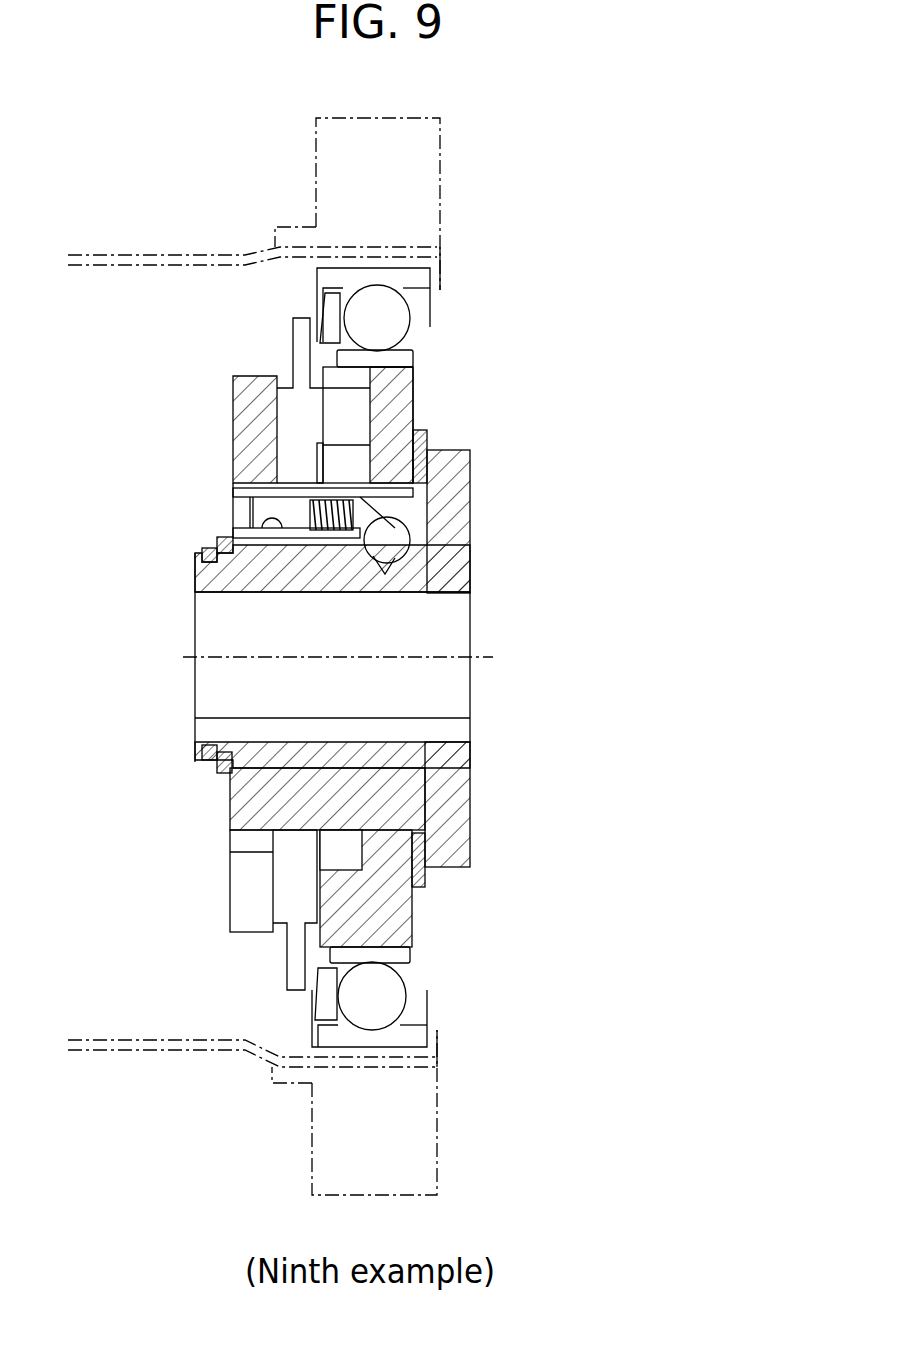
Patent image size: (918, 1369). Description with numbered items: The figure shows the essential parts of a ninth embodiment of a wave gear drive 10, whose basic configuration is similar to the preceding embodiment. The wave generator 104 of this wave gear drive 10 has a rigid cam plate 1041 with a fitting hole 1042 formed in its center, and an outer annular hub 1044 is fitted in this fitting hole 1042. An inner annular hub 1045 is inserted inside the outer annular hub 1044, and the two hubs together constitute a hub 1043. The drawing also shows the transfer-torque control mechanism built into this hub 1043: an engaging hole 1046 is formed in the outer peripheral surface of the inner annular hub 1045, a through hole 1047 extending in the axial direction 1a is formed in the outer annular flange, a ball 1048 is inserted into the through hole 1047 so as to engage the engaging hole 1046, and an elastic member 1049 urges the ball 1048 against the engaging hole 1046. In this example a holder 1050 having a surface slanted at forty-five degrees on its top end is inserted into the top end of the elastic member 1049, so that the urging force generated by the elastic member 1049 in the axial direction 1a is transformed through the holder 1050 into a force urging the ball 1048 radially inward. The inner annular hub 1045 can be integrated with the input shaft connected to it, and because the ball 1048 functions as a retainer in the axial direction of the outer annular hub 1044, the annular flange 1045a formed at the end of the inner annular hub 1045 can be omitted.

The axial direction 1a is at (287, 655).
The wave gear drive 10 is at (558, 249).
The wave generator 104 is at (441, 656).
The rigid cam plate 1041 is at (390, 927).
The fitting hole 1042 is at (387, 830).
The hub 1043 is at (581, 672).
The outer annular hub 1044 is at (413, 527).
The inner annular hub 1045 is at (420, 758).
The annular flange 1045a is at (460, 867).
The engaging hole 1046 is at (362, 520).
The through hole 1047 is at (263, 522).
The ball 1048 is at (387, 545).
The elastic member 1049 is at (313, 490).
The holder 1050 is at (320, 592).